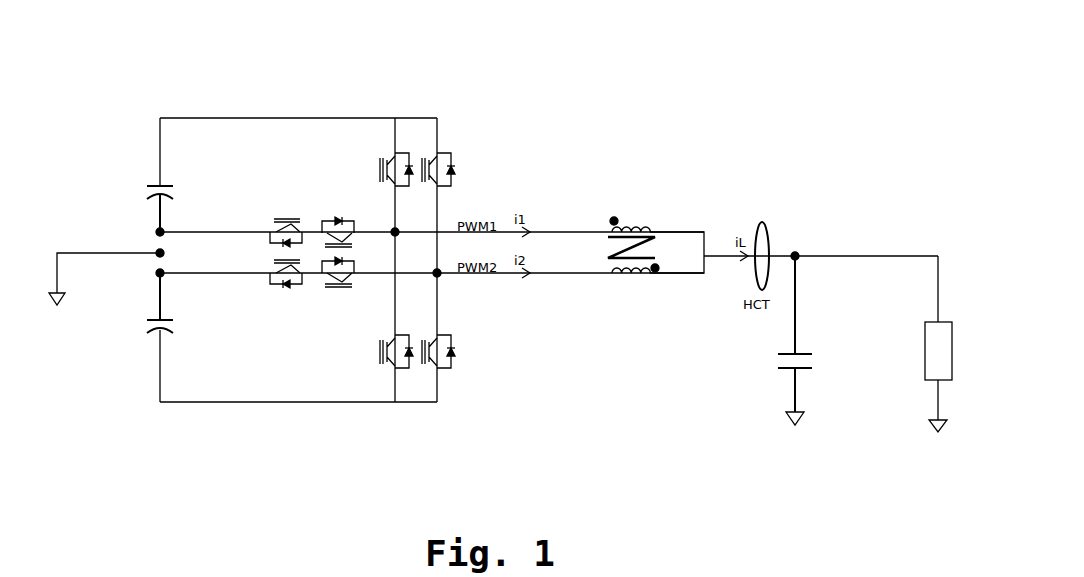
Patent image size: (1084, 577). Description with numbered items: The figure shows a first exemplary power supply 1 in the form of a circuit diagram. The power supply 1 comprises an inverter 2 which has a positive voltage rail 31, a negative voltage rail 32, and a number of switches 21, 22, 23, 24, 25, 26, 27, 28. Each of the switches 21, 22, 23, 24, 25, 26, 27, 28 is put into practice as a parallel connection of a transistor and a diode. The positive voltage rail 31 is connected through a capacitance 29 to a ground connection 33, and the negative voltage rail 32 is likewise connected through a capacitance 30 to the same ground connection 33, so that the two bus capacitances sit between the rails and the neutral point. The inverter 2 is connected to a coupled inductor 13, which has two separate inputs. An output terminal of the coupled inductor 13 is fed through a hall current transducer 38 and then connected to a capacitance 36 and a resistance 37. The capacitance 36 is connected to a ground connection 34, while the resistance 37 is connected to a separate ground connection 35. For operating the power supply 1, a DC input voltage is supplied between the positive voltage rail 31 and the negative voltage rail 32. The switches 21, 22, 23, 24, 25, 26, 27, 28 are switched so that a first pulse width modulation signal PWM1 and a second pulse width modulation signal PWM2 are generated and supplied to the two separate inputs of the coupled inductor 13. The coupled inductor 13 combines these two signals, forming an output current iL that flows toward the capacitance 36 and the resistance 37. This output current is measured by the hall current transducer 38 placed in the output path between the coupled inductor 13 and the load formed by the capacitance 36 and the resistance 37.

The power supply 1 is at (693, 68).
The inverter 2 is at (307, 72).
The coupled inductor 13 is at (630, 215).
The switch 21 is at (262, 211).
The switch 22 is at (325, 209).
The switch 23 is at (262, 295).
The switch 24 is at (322, 298).
The switch 25 is at (363, 165).
The switch 26 is at (465, 157).
The switch 27 is at (365, 348).
The switch 28 is at (465, 365).
The capacitance 29 is at (133, 196).
The capacitance 30 is at (140, 318).
The positive voltage rail 31 is at (143, 107).
The negative voltage rail 32 is at (143, 413).
The ground connection 33 is at (68, 312).
The ground connection 34 is at (770, 424).
The ground connection 35 is at (918, 428).
The capacitance 36 is at (770, 366).
The resistance 37 is at (905, 330).
The hall current transducer 38 is at (774, 221).